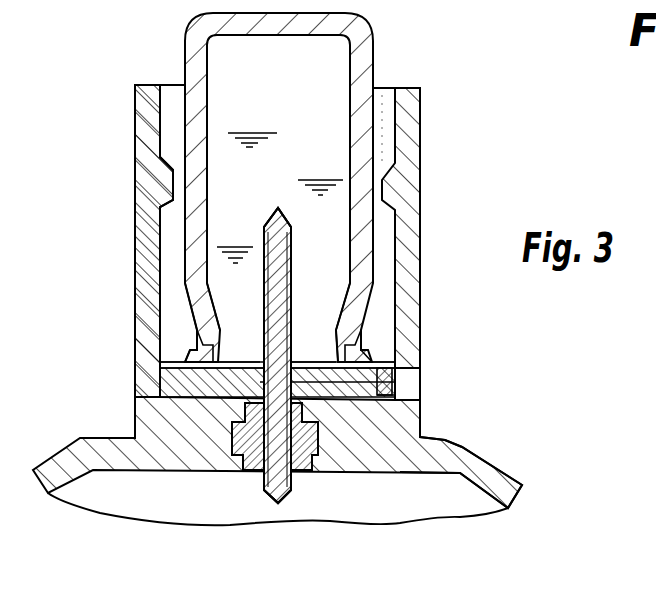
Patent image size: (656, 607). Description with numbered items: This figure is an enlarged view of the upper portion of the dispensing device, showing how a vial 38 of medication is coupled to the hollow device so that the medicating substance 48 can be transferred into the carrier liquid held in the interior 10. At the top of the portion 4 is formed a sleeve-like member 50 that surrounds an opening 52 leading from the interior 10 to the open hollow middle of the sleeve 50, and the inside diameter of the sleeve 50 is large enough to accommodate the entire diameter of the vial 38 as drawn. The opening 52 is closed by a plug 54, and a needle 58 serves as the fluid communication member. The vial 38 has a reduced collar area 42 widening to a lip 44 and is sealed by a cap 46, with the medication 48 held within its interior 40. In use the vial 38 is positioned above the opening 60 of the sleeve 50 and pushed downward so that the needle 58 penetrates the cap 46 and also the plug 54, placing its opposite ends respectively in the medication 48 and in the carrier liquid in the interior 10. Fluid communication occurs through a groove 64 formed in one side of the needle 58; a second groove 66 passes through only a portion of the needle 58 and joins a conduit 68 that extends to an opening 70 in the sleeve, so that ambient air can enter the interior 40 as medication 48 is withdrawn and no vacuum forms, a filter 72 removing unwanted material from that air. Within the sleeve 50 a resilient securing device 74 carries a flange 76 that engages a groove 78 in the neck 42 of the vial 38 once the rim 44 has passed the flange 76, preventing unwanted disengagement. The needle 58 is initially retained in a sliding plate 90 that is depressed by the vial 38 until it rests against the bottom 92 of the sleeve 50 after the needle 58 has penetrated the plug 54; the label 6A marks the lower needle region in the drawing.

The portion 4 is at (497, 462).
The interior 10 is at (402, 515).
The vial 38 is at (372, 42).
The interior of vial 40 is at (292, 88).
The reduced collar area 42 is at (360, 338).
The lip 44 is at (392, 340).
The cap 46 is at (305, 362).
The medicating substance 48 is at (305, 178).
The sleeve-like member 50 is at (421, 201).
The opening 52 is at (257, 457).
The plug 54 is at (308, 457).
The needle 58 is at (291, 250).
The opening of sleeve 60 is at (383, 95).
The groove 64 is at (235, 280).
The second groove 66 is at (292, 278).
The conduit 68 is at (400, 407).
The opening 70 is at (393, 374).
The filter 72 is at (393, 387).
The securing device 74 is at (185, 348).
The flange 76 is at (184, 300).
The groove 78 is at (239, 345).
The sliding plate 90 is at (190, 380).
The bottom of sleeve 92 is at (135, 421).
The needle point 6A is at (276, 500).